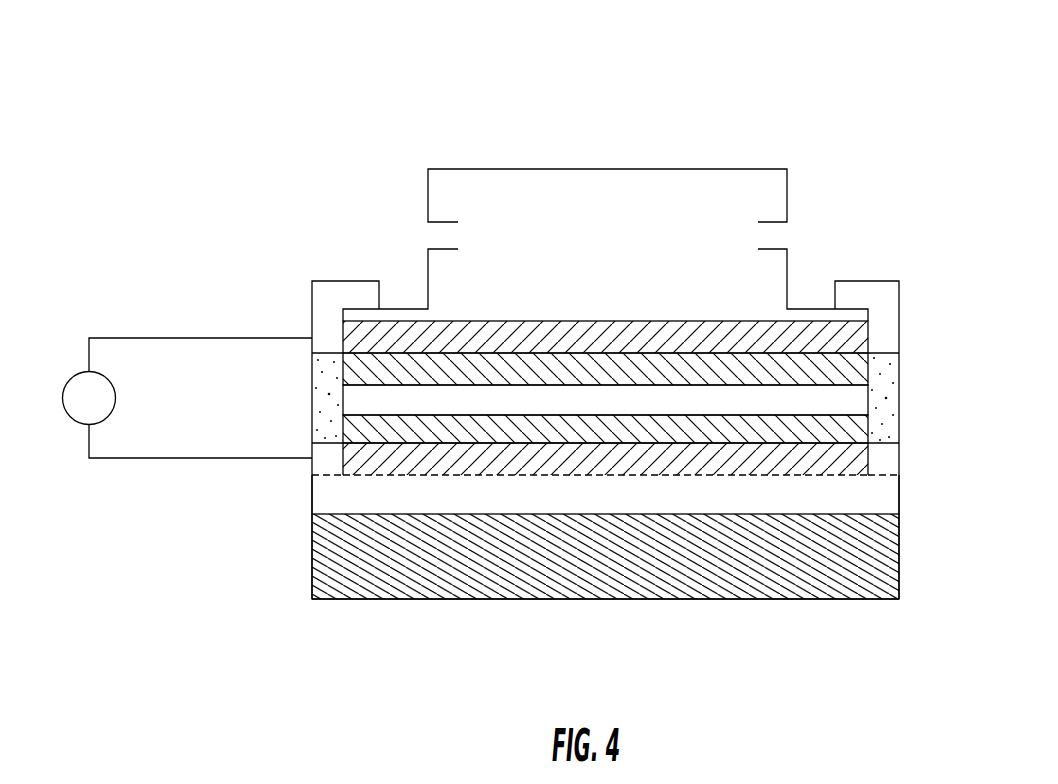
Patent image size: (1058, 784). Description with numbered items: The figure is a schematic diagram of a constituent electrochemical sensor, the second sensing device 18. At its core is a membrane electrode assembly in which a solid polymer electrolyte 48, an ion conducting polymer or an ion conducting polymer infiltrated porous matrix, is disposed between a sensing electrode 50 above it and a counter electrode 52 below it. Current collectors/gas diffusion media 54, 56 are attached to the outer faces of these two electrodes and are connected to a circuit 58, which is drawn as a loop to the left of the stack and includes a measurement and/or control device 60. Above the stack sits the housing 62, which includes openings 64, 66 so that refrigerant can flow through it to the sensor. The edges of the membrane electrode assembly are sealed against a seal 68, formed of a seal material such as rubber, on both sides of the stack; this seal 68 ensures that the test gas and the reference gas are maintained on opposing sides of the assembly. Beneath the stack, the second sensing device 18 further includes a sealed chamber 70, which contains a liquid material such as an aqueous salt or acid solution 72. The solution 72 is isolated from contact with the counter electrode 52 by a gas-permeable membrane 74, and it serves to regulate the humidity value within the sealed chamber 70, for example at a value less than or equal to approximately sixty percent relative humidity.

The second sensing device 18 is at (843, 118).
The solid polymer electrolyte 48 is at (853, 400).
The sensing electrode 50 is at (869, 375).
The counter electrode 52 is at (870, 427).
The current collector/gas diffusion medium 54 is at (856, 335).
The current collector/gas diffusion medium 56 is at (851, 455).
The circuit 58 is at (215, 338).
The measurement and/or control device 60 is at (63, 393).
The housing 62 is at (568, 168).
The opening 64 is at (428, 222).
The opening 66 is at (787, 222).
The seal 68 is at (312, 408).
The sealed chamber 70 is at (327, 493).
The aqueous salt or acid solution 72 is at (745, 545).
The gas-permeable membrane 74 is at (555, 476).